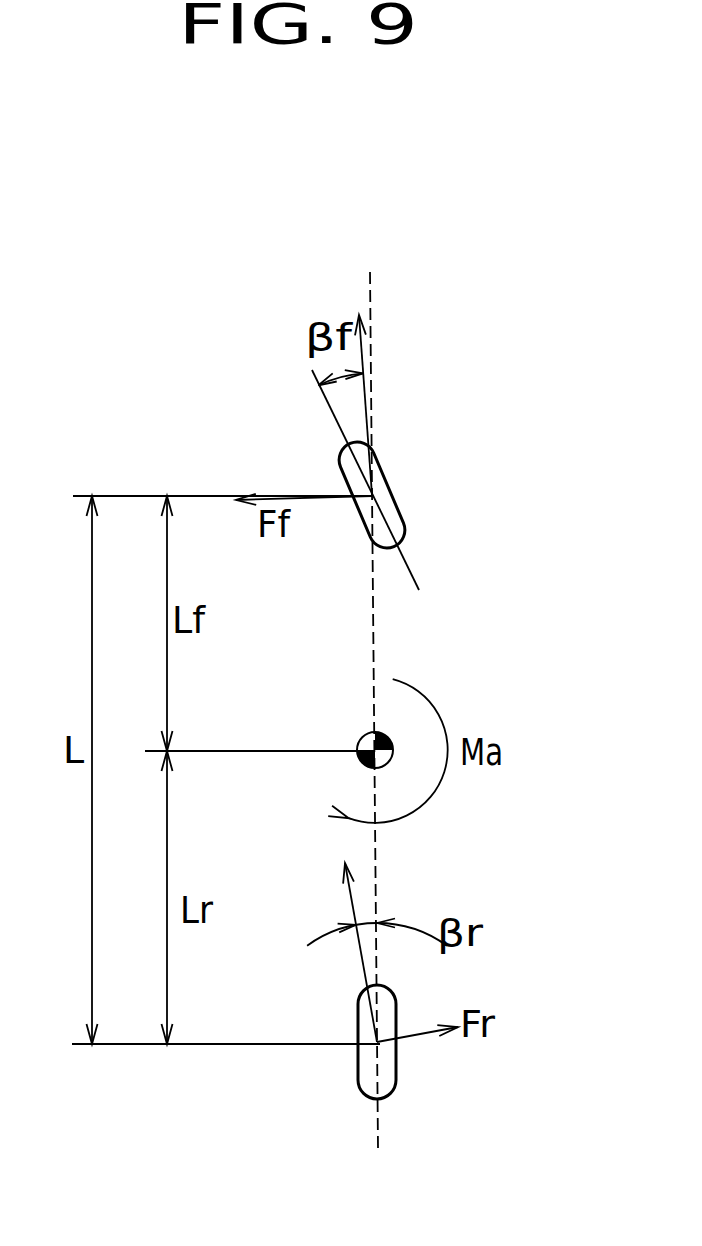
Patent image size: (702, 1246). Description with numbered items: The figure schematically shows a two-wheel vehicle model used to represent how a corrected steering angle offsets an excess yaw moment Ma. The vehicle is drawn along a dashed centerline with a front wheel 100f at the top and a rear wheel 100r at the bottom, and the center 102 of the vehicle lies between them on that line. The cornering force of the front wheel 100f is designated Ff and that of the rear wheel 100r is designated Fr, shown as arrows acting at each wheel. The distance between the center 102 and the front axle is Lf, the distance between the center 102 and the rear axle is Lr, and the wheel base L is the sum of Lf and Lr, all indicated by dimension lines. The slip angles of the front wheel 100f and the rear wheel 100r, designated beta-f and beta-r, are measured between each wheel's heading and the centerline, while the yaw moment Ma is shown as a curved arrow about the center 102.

The front wheel 100f is at (398, 499).
The rear wheel 100r is at (397, 1077).
The center of the vehicle 102 is at (361, 739).